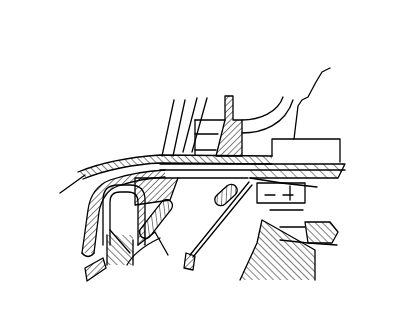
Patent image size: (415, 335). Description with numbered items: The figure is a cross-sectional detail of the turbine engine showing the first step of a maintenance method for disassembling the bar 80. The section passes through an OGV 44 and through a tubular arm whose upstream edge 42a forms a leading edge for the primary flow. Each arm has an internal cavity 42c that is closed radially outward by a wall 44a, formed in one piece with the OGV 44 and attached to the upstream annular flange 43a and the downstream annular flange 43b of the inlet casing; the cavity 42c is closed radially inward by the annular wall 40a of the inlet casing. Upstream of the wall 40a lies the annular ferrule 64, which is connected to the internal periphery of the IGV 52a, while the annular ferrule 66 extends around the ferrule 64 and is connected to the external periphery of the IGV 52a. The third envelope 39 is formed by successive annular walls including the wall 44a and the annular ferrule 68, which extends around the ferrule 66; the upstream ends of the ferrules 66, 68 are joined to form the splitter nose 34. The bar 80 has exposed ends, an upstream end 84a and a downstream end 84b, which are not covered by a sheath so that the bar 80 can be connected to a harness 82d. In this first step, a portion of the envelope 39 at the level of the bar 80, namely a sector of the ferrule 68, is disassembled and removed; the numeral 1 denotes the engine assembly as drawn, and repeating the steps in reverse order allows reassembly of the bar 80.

The vehicle body 1 is at (302, 250).
The splitter nose 34 is at (78, 175).
The envelope 39 is at (323, 128).
The annular wall 40a is at (174, 201).
The leading edge 42a is at (185, 215).
The internal cavity 42c is at (229, 95).
The upstream annular flange 43a is at (195, 121).
The downstream annular flange 43b is at (302, 182).
The OGV 44 is at (293, 98).
The wall 44a is at (210, 214).
The IGV 52a is at (83, 195).
The annular ferrule 64 is at (86, 226).
The annular ferrule 66 is at (93, 168).
The annular ferrule 68 is at (83, 172).
The bar 80 is at (97, 282).
The harness 82d is at (340, 166).
The upstream end 84a is at (82, 249).
The downstream end 84b is at (133, 155).